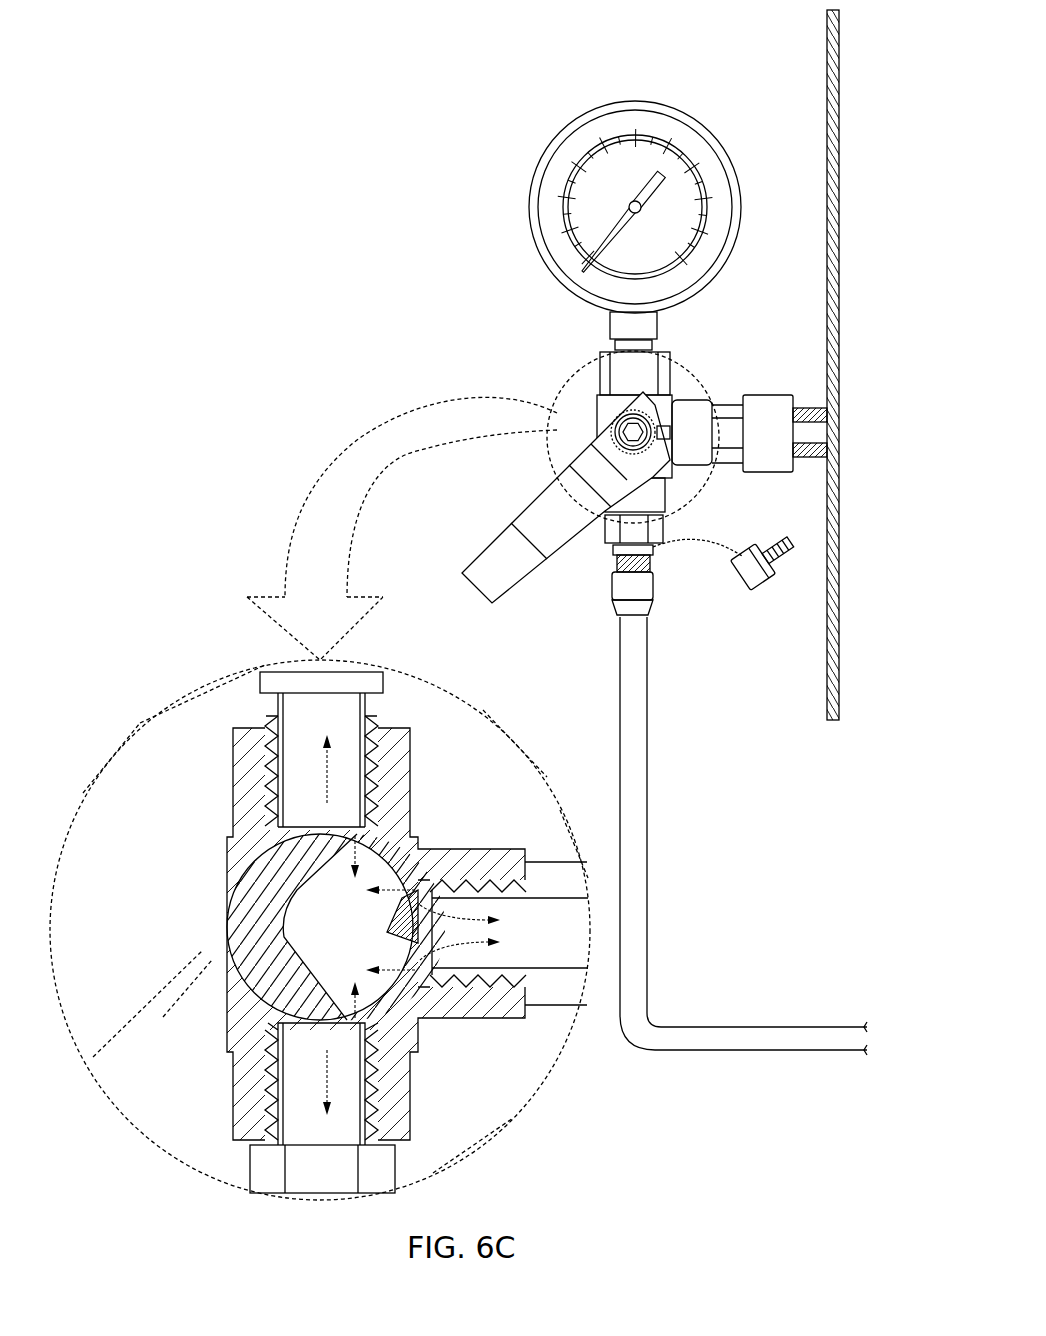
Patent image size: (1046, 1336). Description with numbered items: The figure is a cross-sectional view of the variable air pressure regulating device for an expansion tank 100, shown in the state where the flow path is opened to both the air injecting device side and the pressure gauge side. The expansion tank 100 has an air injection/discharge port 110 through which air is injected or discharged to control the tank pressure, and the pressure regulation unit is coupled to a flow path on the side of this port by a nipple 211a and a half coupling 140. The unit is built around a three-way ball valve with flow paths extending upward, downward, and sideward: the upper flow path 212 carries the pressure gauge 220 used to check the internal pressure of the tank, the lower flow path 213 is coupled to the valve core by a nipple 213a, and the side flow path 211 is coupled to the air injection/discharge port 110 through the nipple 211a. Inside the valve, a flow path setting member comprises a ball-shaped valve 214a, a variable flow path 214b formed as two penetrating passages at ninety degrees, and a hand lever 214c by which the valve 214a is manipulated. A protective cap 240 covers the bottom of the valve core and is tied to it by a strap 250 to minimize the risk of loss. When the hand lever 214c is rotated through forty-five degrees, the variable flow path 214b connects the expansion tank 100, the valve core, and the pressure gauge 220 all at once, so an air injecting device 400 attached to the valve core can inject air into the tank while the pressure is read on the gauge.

The expansion tank 100 is at (827, 138).
The air injection/discharge port 110 is at (800, 460).
The half coupling 140 is at (762, 413).
The side flow path 211 is at (690, 418).
The nipple 211a is at (538, 865).
The upper flow path 212 is at (605, 375).
The lower flow path 213 is at (410, 1078).
The nipple 213a is at (395, 1150).
The valve 214a is at (300, 927).
The variable flow path 214b is at (245, 845).
The hand lever 214c is at (548, 492).
The pressure gauge 220 is at (565, 245).
The protective cap 240 is at (770, 587).
The strap 250 is at (692, 548).
The air injecting device 400 is at (715, 1040).